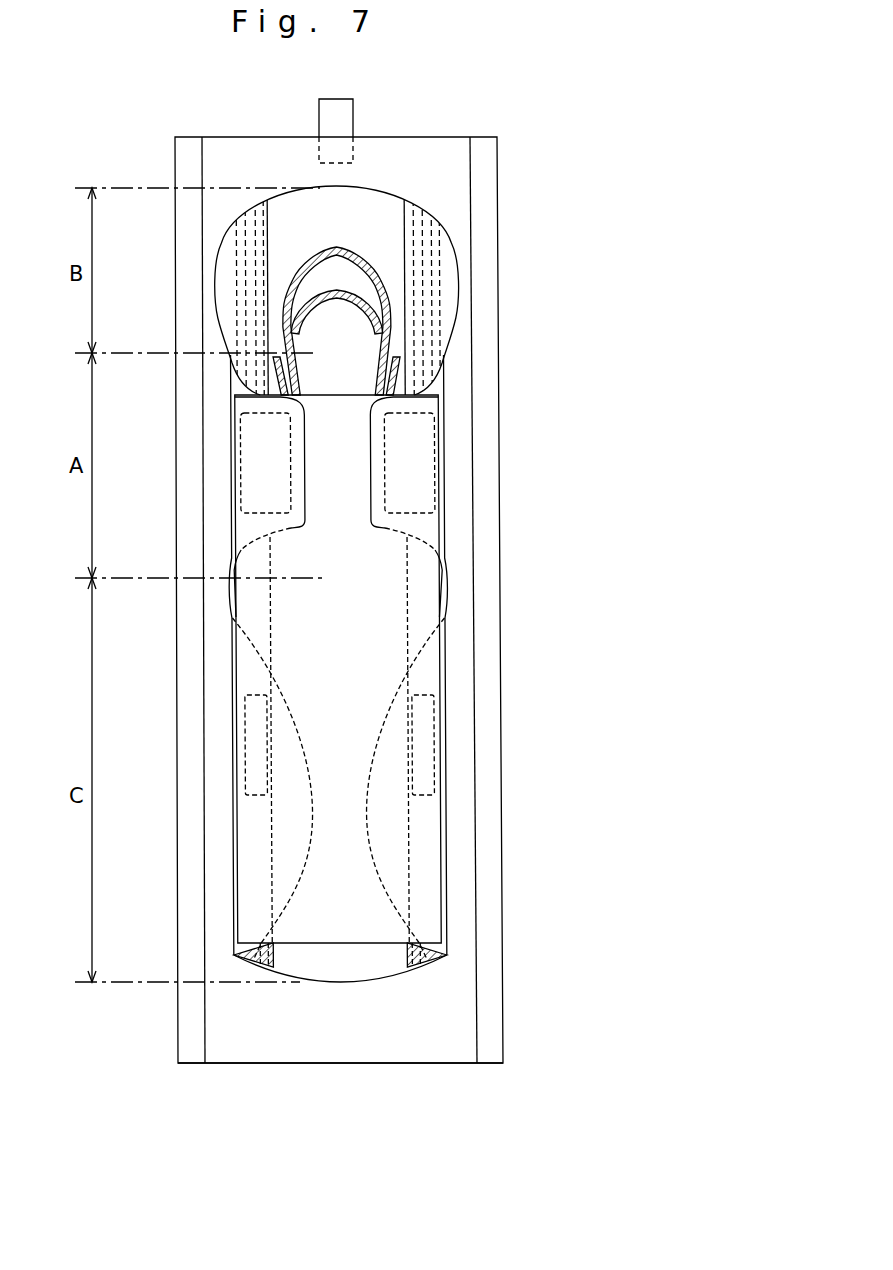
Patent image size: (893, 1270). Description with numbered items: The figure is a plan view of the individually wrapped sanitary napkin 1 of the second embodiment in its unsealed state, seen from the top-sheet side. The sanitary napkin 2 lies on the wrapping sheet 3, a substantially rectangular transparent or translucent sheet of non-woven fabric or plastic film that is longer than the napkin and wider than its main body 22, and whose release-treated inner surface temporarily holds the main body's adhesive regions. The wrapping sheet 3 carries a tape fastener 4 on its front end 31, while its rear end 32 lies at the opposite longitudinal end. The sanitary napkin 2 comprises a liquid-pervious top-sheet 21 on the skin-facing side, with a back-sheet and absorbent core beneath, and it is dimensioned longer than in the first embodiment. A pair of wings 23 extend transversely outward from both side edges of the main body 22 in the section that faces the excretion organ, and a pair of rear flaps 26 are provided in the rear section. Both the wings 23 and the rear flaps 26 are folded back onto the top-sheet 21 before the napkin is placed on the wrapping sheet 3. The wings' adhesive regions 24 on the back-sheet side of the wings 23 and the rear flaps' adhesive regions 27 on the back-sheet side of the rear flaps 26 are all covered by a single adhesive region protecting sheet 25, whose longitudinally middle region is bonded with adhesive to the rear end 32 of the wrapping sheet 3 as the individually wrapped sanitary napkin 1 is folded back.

The individually wrapped sanitary napkin 1 is at (140, 134).
The sanitary napkin 2 is at (441, 236).
The wrapping sheet 3 is at (440, 155).
The front end 31 is at (187, 142).
The rear end 32 is at (218, 1064).
The tape fastener 4 is at (328, 122).
The top-sheet 21 is at (377, 197).
The main body 22 is at (400, 325).
The wings 23 is at (248, 392).
The wings' adhesive regions 24 is at (260, 463).
The adhesive region protecting sheet 25 is at (250, 528).
The rear flaps 26 is at (242, 668).
The rear flaps' adhesive regions 27 is at (255, 740).